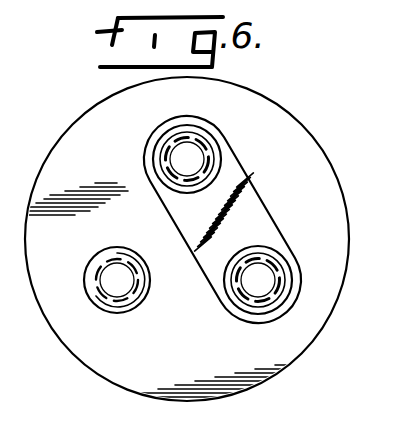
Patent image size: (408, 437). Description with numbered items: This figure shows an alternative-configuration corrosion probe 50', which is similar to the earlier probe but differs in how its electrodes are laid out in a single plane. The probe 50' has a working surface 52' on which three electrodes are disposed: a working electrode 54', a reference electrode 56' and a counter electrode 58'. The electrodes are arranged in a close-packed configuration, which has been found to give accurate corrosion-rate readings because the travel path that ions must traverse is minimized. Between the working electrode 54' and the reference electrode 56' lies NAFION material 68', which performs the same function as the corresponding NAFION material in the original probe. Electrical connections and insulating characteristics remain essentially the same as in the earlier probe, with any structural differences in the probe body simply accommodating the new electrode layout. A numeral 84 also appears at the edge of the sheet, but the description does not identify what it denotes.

The probe 50' is at (195, 226).
The working surface 52' is at (154, 236).
The working electrode 54' is at (220, 159).
The reference electrode 56' is at (258, 302).
The counter electrode 58' is at (118, 302).
The NAFION material 68' is at (233, 219).
The element (partially shown) 84 is at (298, 429).